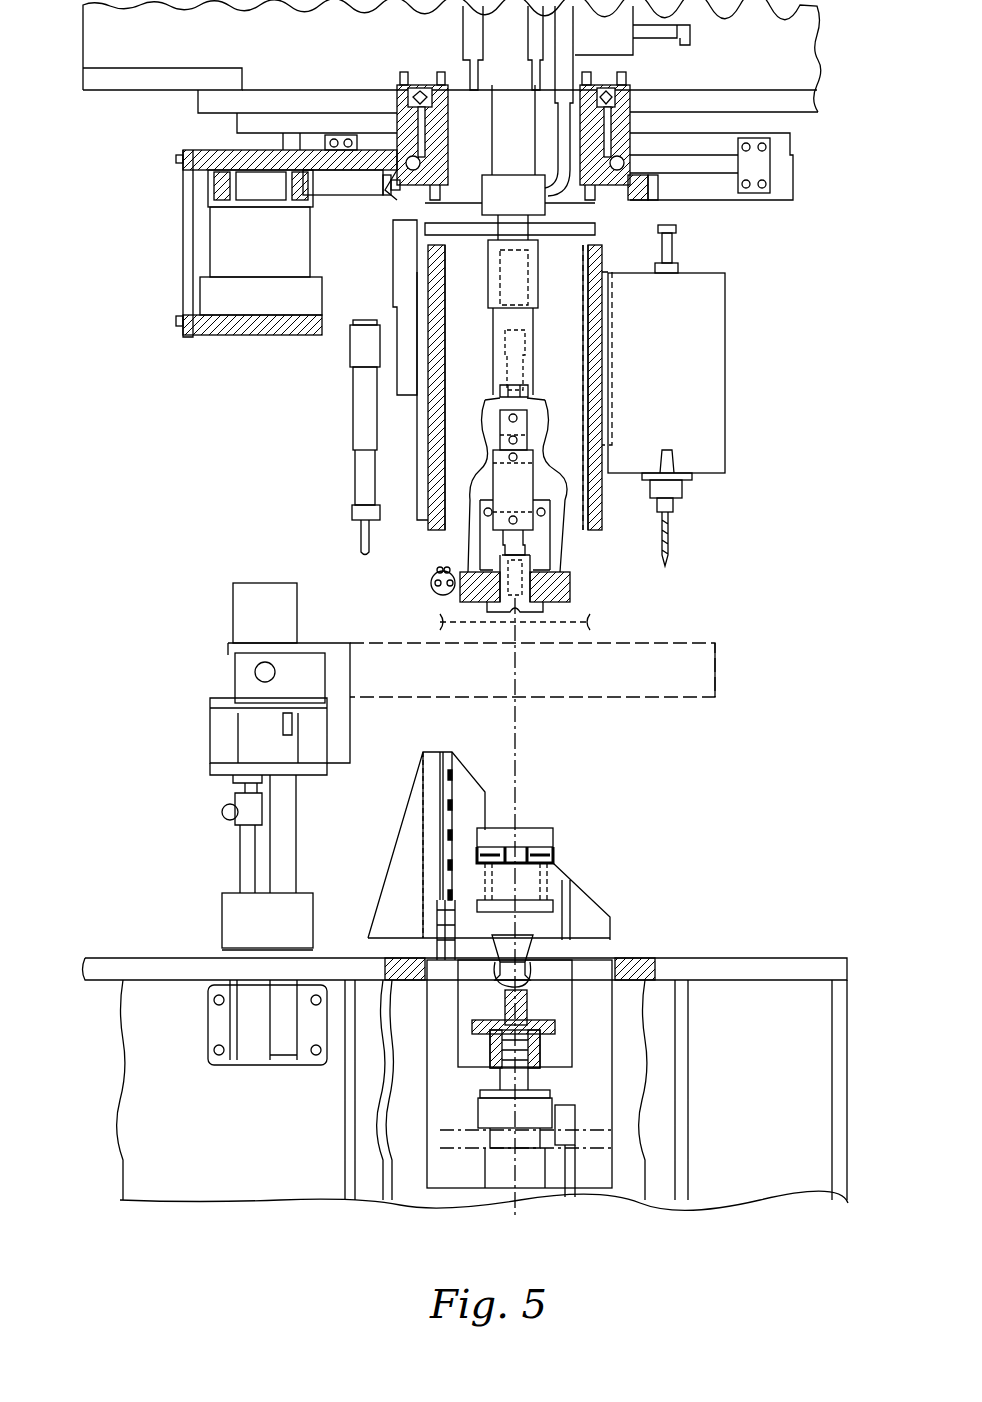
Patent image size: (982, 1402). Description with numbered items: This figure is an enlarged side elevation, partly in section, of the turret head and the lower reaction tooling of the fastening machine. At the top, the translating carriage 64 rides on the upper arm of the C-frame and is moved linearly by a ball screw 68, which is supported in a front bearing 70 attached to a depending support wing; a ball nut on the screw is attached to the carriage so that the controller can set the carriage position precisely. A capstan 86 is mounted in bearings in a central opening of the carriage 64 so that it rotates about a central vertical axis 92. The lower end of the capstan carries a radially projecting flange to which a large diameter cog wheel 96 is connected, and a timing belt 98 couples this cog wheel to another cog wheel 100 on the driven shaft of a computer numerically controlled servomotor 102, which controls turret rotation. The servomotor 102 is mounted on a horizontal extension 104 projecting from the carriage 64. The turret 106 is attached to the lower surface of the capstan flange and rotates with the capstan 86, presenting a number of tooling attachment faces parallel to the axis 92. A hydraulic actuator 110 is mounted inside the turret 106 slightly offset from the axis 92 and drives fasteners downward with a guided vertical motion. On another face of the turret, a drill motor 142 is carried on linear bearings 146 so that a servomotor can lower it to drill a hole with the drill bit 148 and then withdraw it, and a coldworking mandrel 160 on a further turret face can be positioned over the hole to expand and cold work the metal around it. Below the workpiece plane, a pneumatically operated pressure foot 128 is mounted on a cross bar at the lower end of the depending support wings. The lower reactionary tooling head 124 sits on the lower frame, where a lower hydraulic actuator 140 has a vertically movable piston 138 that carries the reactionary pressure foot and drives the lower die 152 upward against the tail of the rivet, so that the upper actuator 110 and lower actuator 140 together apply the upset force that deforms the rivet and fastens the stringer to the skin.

The translating carriage 64 is at (403, 110).
The capstan 86 is at (440, 138).
The horizontal extension 104 is at (215, 150).
The cog wheel 100 is at (193, 178).
The servomotor 102 is at (222, 260).
The timing belt 98 is at (344, 188).
The cog wheel 96 is at (389, 200).
The ball screw 68 is at (696, 165).
The front bearing 70 is at (760, 164).
The hydraulic actuator 110 is at (540, 290).
The turret 106 is at (602, 352).
The linear bearings 146 is at (602, 426).
The pressure foot 128 is at (518, 612).
The central vertical axis 92 is at (520, 745).
The coldworking mandrel 160 is at (355, 488).
The drill motor 142 is at (705, 397).
The drill bit 148 is at (670, 545).
The piston 138 is at (420, 1095).
The reactionary tooling head 124 is at (588, 858).
The lower die 152 is at (525, 830).
The lower hydraulic actuator 140 is at (572, 1093).